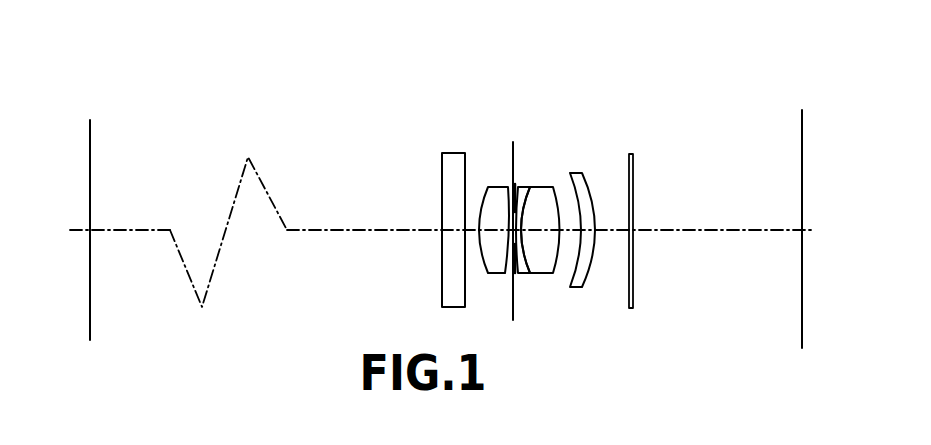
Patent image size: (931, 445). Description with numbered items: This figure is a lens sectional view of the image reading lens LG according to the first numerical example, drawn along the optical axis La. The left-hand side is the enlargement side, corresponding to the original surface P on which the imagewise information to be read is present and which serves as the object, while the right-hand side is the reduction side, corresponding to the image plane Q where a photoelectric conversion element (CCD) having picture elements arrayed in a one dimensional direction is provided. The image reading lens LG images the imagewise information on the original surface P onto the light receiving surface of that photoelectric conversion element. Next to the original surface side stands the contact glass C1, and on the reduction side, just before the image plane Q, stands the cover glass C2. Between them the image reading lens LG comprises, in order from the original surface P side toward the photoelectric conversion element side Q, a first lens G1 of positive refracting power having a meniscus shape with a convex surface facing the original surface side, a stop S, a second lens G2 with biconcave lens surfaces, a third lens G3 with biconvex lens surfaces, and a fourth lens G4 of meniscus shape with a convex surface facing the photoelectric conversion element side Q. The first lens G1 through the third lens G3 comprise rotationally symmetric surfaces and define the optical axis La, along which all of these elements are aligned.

The original surface P is at (103, 160).
The optical axis La is at (343, 231).
The contact glass C1 is at (447, 175).
The image reading lens LG is at (415, 67).
The first lens G1 is at (500, 198).
The stop S is at (502, 162).
The second lens G2 is at (518, 193).
The third lens G3 is at (538, 193).
The fourth lens G4 is at (578, 171).
The cover glass C2 is at (632, 177).
The image plane Q is at (787, 147).